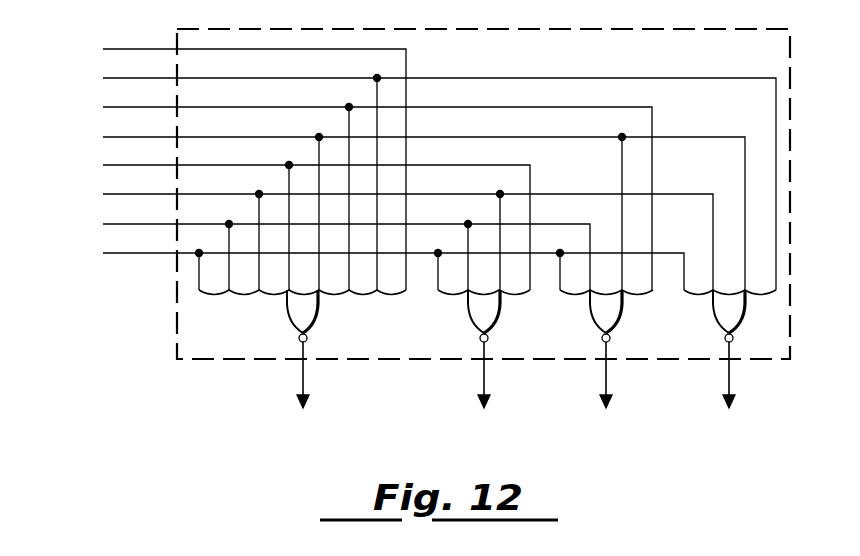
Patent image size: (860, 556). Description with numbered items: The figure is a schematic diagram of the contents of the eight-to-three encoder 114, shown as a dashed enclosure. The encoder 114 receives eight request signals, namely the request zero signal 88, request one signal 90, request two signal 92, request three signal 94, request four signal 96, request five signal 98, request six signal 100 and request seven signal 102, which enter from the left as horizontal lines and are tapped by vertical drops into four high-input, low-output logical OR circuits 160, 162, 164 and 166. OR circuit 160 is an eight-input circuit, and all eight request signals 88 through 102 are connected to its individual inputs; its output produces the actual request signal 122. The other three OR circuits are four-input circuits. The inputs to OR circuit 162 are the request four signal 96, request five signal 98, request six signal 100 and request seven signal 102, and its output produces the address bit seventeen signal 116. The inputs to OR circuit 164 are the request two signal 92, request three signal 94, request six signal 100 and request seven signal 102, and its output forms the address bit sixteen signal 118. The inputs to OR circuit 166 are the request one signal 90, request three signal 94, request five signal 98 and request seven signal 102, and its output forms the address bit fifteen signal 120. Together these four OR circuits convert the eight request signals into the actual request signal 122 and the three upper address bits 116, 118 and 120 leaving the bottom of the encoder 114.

The request 0 signal 88 is at (112, 48).
The request 1 signal 90 is at (112, 77).
The request 2 signal 92 is at (112, 106).
The request 3 signal 94 is at (112, 136).
The request 4 signal 96 is at (112, 164).
The request 5 signal 98 is at (112, 193).
The request 6 signal 100 is at (112, 223).
The request 7 signal 102 is at (112, 252).
The 8-to-3 encoder 114 is at (712, 29).
The OR circuit 160 is at (287, 318).
The OR circuit 162 is at (468, 318).
The OR circuit 164 is at (590, 318).
The OR circuit 166 is at (713, 318).
The actual request signal 122 is at (303, 383).
The address bit 17 116 is at (484, 383).
The address bit 16 118 is at (606, 383).
The address bit 15 120 is at (729, 383).